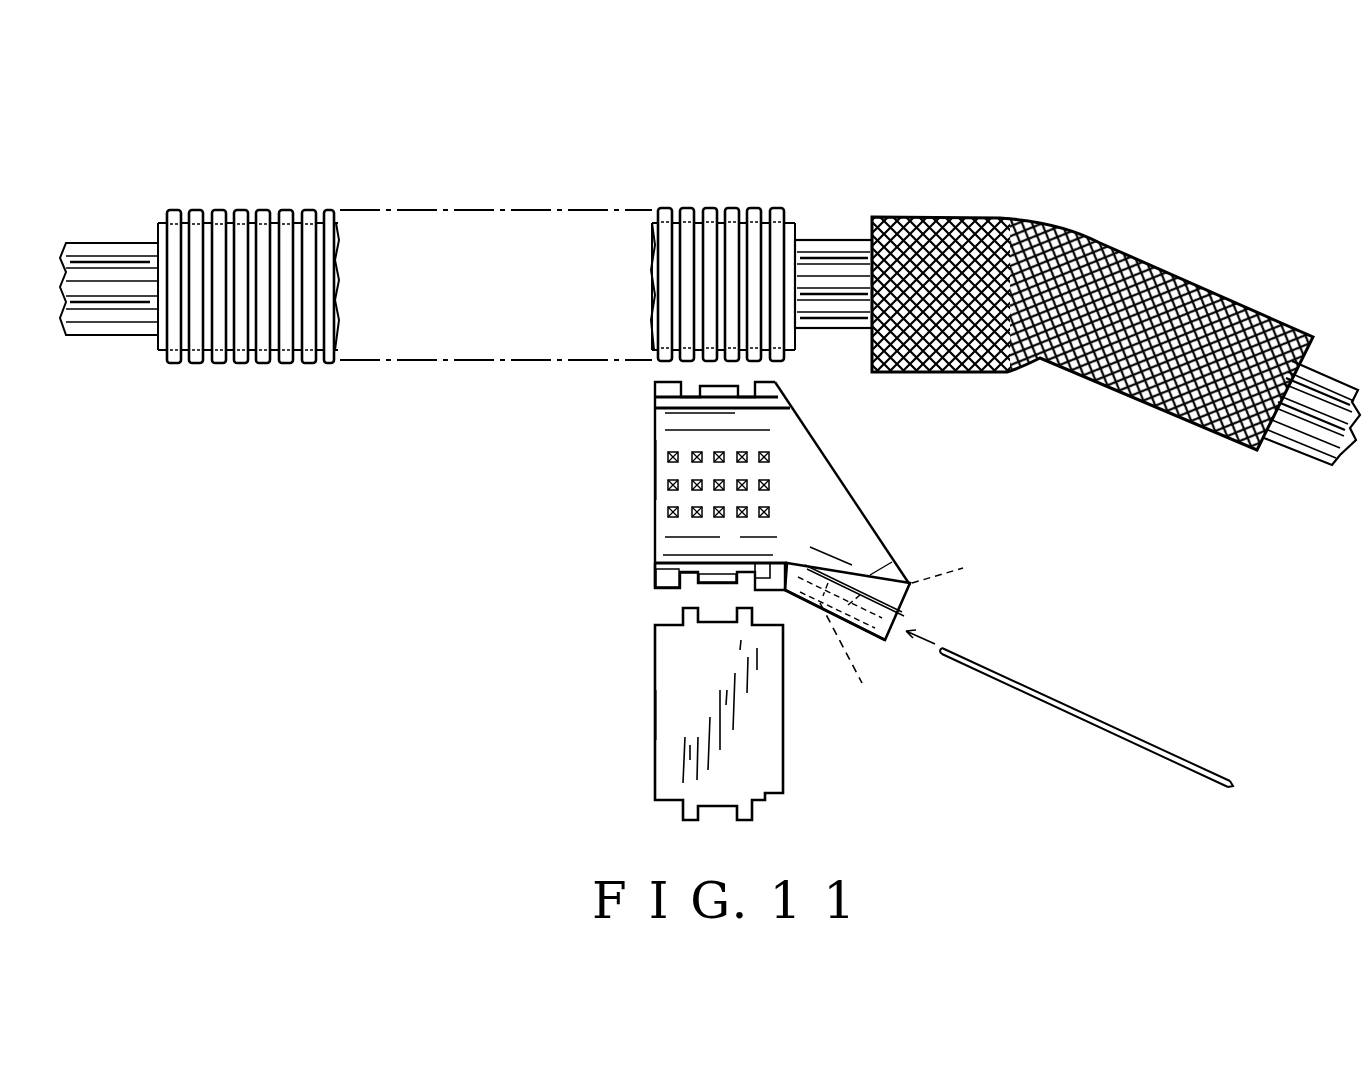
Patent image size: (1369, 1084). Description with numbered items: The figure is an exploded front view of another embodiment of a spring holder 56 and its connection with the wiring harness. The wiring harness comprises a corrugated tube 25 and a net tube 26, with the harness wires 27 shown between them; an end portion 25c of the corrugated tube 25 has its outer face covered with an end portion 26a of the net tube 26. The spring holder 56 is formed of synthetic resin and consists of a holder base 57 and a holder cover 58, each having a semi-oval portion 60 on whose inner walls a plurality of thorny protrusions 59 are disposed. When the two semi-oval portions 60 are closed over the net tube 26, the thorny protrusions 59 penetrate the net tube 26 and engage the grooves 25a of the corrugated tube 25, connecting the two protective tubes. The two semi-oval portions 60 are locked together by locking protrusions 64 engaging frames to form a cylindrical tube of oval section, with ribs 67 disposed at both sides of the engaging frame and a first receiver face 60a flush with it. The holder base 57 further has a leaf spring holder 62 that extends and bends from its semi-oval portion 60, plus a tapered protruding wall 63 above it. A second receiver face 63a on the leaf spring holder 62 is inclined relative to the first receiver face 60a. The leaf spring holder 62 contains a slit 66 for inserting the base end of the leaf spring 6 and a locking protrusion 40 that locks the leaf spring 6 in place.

The corrugated tube 25 is at (457, 221).
The grooves 25a is at (704, 207).
The end portion 25c is at (755, 207).
The electric wires 27 is at (838, 240).
The end portion 26a is at (937, 217).
The net tube 26 is at (1116, 283).
The spring holder 56 is at (510, 504).
The holder base 57 is at (772, 578).
The holder cover 58 is at (641, 678).
The thorny protrusions 59 is at (770, 457).
The semi-oval portion 60 is at (655, 466).
The first receiver face 60a is at (660, 598).
The ribs 67 is at (655, 583).
The tapered protruding wall 63 is at (870, 530).
The second receiver face 63a is at (862, 633).
The leaf spring holder 62 is at (912, 661).
The locking protrusions 64 is at (740, 590).
The slit 66 is at (965, 565).
The locking protrusion 40 is at (850, 667).
The leaf spring 6 is at (1165, 750).